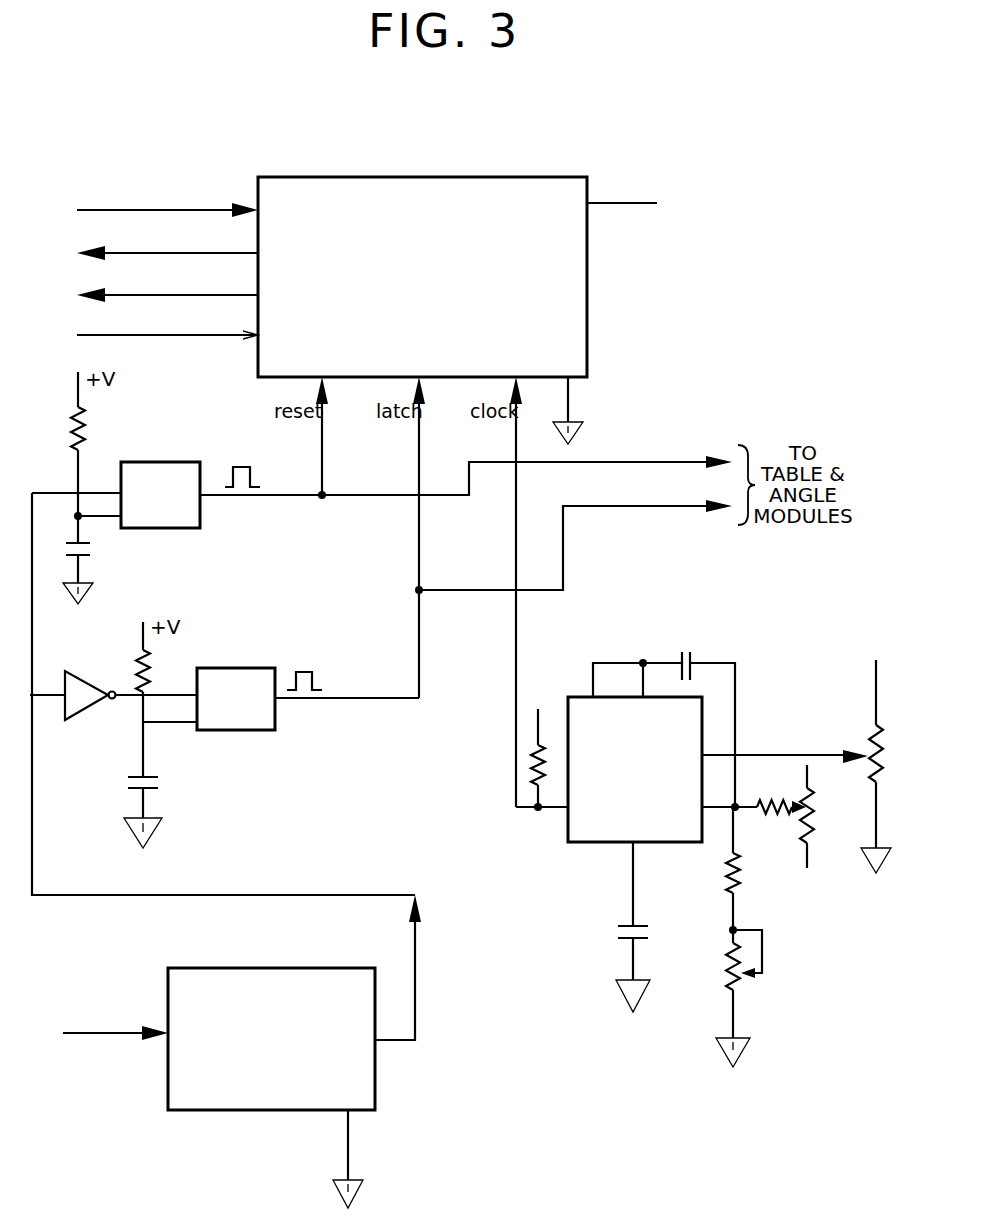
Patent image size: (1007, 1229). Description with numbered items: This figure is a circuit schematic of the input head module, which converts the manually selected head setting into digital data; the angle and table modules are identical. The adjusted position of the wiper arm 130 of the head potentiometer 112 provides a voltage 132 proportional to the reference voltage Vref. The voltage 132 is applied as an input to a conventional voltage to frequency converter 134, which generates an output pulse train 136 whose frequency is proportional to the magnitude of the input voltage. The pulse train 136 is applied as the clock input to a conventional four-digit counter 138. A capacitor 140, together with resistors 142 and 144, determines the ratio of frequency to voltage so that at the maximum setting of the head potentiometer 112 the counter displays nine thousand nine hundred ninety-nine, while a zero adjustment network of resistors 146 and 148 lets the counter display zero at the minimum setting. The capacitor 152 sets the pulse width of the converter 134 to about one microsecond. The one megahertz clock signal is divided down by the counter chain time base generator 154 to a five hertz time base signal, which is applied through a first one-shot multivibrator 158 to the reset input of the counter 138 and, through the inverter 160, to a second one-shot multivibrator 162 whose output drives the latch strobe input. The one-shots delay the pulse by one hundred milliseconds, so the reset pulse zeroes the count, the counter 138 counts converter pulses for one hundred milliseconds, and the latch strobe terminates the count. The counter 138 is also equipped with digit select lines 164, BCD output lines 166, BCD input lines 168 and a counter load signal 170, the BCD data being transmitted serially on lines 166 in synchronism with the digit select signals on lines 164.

The 4 digit counter 138 is at (543, 188).
The BCD input lines 168 is at (181, 208).
The BCD output lines 166 is at (208, 252).
The digit select lines 164 is at (208, 294).
The counter load signal 170 is at (215, 334).
The first one-shot multivibrator 158 is at (168, 462).
The inverter 160 is at (86, 681).
The second one-shot multivibrator 162 is at (262, 668).
The time base generator 154 is at (300, 968).
The voltage to frequency converter 134 is at (584, 843).
The output pulse train 136 is at (511, 779).
The capacitor 140 is at (692, 661).
The voltage 132 is at (785, 735).
The wiper arm 130 is at (859, 744).
The head potentiometer 112 is at (874, 697).
The resistor 148 is at (813, 800).
The resistor 146 is at (760, 816).
The resistor 142 is at (728, 878).
The resistor 144 is at (727, 962).
The capacitor 152 is at (621, 931).